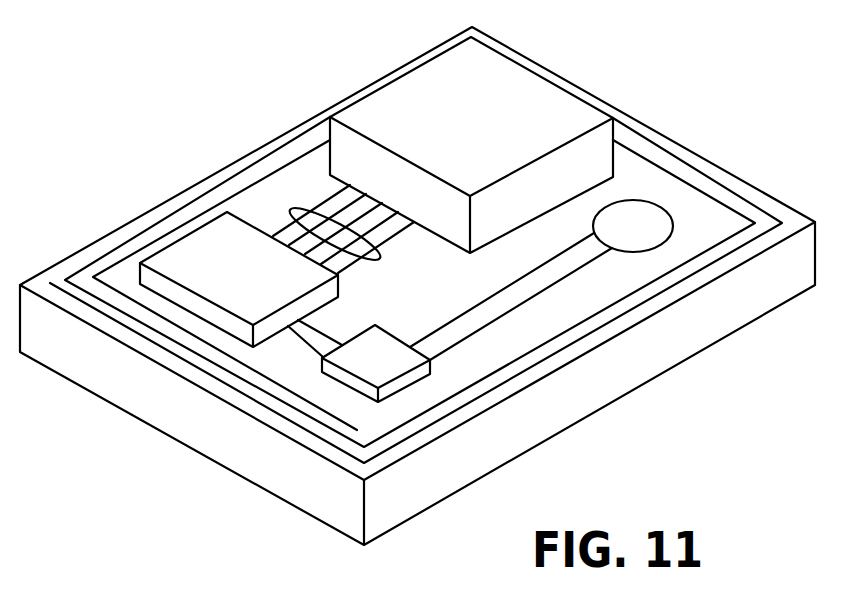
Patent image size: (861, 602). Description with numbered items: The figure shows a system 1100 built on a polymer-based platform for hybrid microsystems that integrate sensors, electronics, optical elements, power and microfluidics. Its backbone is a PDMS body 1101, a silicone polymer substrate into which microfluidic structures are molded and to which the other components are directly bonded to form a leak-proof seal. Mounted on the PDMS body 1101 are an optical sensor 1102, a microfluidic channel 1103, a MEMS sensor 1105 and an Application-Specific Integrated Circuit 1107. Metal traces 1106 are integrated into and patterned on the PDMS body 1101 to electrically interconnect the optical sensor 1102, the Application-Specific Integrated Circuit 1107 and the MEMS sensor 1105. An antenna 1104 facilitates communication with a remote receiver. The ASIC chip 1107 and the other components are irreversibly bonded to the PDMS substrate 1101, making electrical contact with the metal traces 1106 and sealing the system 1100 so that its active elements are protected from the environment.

The system 1100 is at (290, 100).
The PDMS body 1101 is at (178, 407).
The optical sensor 1102 is at (388, 366).
The microfluidic channel 1103 is at (452, 326).
The antenna 1104 is at (663, 158).
The MEMS sensor 1105 is at (520, 119).
The metal traces 1106 is at (290, 211).
The Application-Specific Integrated Circuit 1107 is at (258, 276).